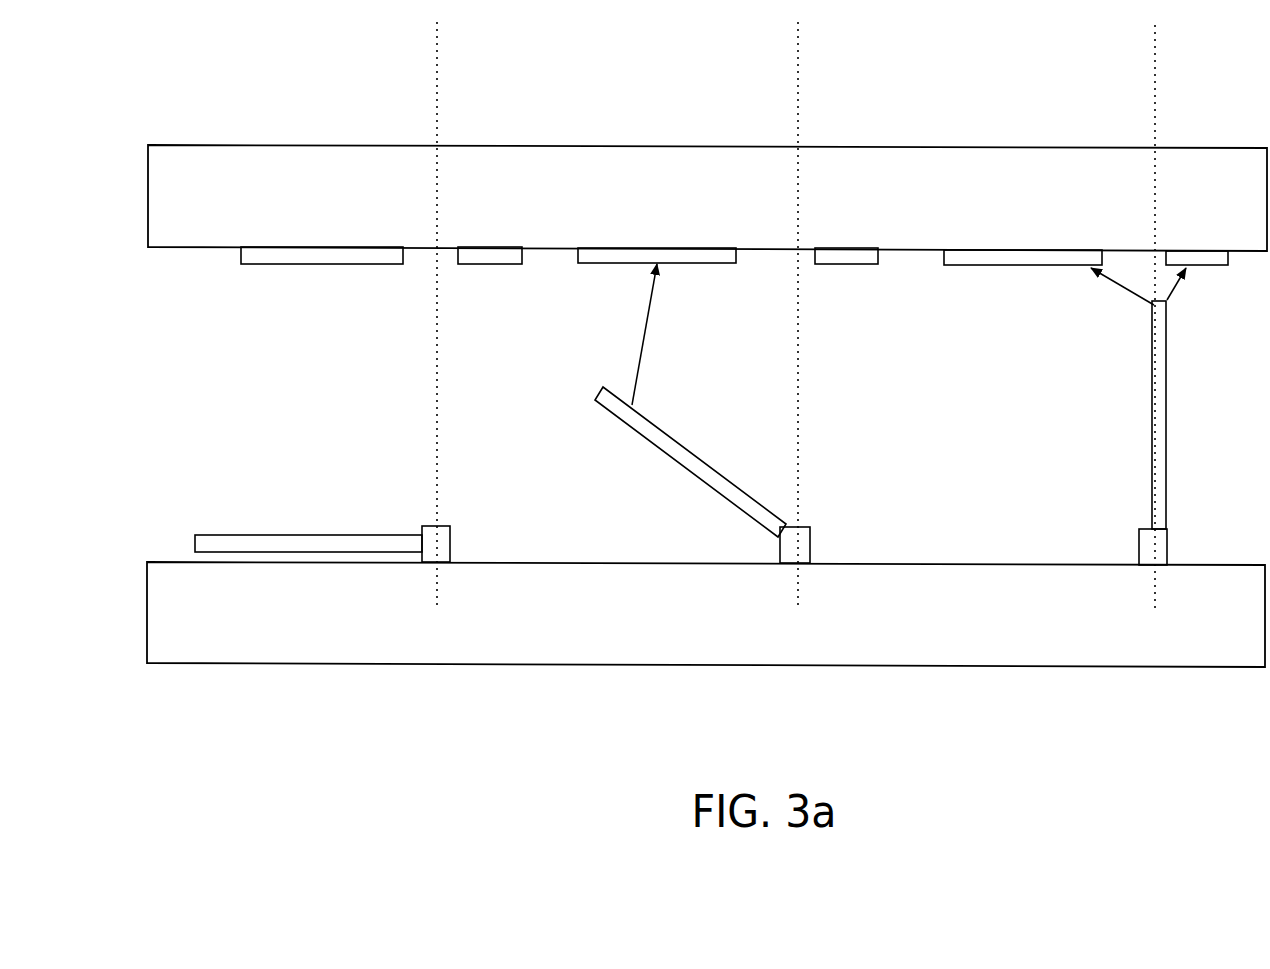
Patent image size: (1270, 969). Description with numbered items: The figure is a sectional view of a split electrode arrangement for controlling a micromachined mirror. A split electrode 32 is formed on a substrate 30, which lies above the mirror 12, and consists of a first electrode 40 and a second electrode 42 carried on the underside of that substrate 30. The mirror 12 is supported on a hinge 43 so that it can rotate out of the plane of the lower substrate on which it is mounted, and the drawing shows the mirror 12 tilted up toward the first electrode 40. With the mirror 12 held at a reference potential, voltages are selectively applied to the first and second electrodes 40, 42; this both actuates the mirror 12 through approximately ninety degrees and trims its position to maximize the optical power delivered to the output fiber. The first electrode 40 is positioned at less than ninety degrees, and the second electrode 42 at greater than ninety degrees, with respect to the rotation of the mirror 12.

The mirror 12 is at (687, 468).
The substrate 30 is at (317, 213).
The split electrode 32 is at (943, 182).
The first electrode 40 is at (623, 247).
The second electrode 42 is at (848, 248).
The hinge 43 is at (831, 547).